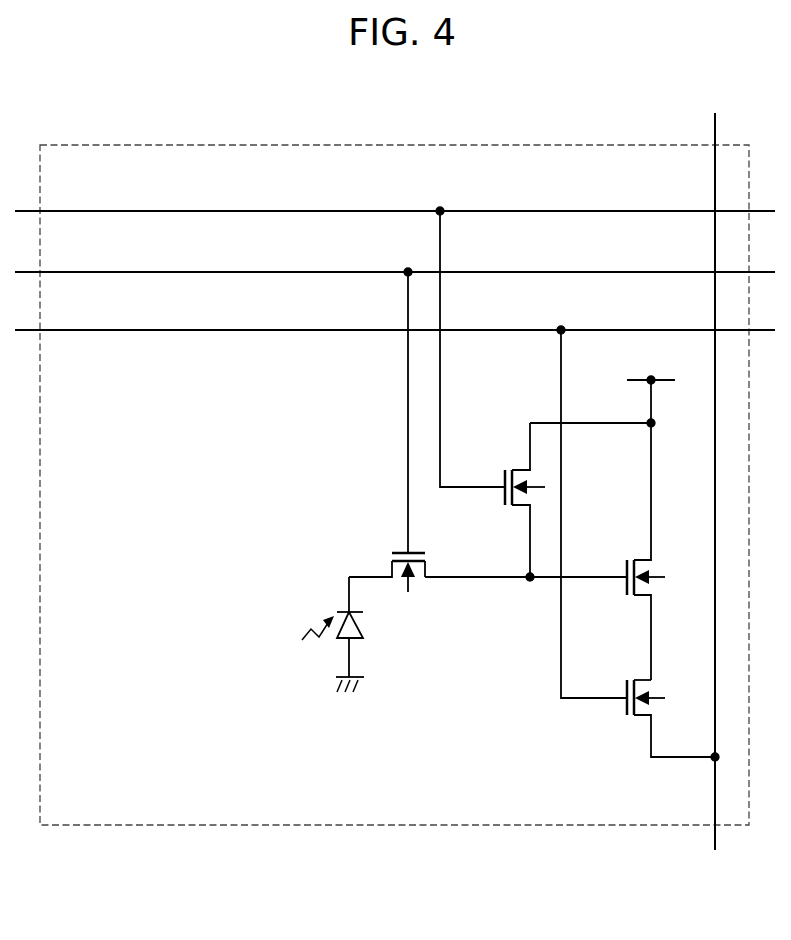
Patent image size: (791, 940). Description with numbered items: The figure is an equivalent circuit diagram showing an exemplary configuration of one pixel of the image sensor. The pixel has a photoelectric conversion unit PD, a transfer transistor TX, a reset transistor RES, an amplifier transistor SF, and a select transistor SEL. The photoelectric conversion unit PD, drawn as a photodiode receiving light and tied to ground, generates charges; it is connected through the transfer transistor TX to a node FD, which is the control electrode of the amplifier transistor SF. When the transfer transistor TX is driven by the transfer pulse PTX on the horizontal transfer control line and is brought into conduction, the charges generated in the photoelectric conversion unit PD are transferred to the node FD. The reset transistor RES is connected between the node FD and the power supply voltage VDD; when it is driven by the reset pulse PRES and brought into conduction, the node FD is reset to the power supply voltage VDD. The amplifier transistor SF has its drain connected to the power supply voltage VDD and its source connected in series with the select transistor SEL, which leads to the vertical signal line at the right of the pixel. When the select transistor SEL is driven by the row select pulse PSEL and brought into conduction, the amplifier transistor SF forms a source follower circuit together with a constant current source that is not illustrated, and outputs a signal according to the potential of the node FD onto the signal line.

The reset pulse PRES is at (395, 334).
The transfer pulse PTX is at (395, 398).
The row select pulse PSEL is at (395, 499).
The power supply voltage VDD is at (604, 387).
The reset transistor RES is at (508, 466).
The amplifier transistor SF is at (630, 557).
The select transistor SEL is at (628, 720).
The node FD is at (482, 580).
The transfer transistor TX is at (390, 553).
The photoelectric conversion unit PD is at (338, 648).